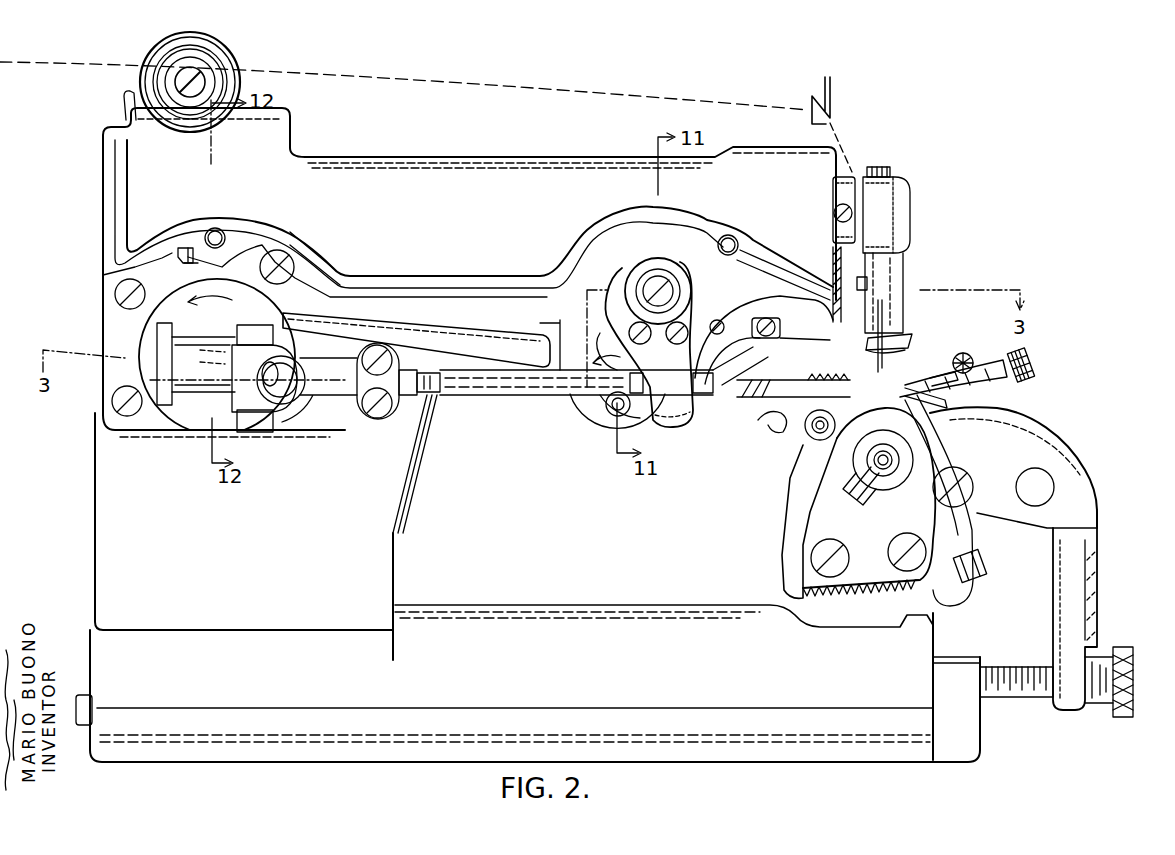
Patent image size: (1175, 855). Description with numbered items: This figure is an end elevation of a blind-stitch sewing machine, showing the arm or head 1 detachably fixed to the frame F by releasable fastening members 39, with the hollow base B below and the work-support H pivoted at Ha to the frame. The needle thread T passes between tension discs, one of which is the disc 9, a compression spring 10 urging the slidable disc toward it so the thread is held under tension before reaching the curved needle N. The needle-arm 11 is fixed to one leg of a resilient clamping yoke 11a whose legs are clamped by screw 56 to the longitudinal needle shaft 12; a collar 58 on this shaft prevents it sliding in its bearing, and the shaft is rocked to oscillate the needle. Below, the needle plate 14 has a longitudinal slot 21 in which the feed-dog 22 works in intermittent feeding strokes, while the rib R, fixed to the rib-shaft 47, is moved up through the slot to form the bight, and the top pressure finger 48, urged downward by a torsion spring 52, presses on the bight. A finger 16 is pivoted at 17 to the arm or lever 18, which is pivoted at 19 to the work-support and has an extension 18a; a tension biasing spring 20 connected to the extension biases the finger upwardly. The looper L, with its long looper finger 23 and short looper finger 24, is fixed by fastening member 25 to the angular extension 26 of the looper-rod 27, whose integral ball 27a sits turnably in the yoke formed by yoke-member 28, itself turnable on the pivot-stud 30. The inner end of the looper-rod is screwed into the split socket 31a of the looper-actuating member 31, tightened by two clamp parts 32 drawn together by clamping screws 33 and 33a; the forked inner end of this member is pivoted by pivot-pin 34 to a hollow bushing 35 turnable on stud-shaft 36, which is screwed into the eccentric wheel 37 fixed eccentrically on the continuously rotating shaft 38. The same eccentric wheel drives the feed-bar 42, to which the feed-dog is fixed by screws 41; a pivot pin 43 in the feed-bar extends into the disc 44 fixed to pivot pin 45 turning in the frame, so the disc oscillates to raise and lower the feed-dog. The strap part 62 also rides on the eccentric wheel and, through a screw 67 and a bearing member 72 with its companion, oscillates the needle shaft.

The arm or head 1 is at (383, 563).
The disc 9 is at (220, 49).
The compression spring 10 is at (168, 57).
The needle-arm 11 is at (900, 268).
The resilient clamping yoke 11a is at (898, 193).
The needle shaft 12 is at (843, 205).
The needle plate 14 is at (760, 388).
The finger 16 is at (758, 420).
The pivot 17 is at (812, 432).
The arm or lever 18 is at (822, 452).
The extension 18a is at (962, 533).
The pivot 19 is at (970, 490).
The tension biasing spring 20 is at (862, 592).
The longitudinal slot 21 is at (945, 402).
The feed-dog 22 is at (837, 378).
The long looper finger 23 is at (905, 342).
The short looper finger 24 is at (893, 358).
The fastening member 25 is at (766, 318).
The angular extension 26 is at (735, 349).
The looper-rod 27 is at (487, 397).
The ball 27a is at (625, 408).
The yoke-member 28 is at (683, 417).
The pivot-stud 30 is at (662, 288).
The looper-actuating member 31 is at (347, 392).
The socket 31a is at (415, 417).
The clamp parts 32 is at (408, 357).
The clamping screw 33 is at (364, 354).
The clamping screw 33a is at (380, 413).
The pivot-pin 34 is at (258, 434).
The hollow bushing 35 is at (203, 324).
The stud-shaft 36 is at (278, 376).
The eccentric wheel 37 is at (170, 318).
The shaft 38 is at (215, 347).
The releasable fastening member 39 is at (116, 294).
The screws 41 is at (719, 322).
The feed-bar 42 is at (390, 313).
The pivot pin 43 is at (612, 335).
The disc 44 is at (590, 407).
The pivot pin 45 is at (616, 408).
The rib-shaft 47 is at (882, 430).
The top pressure finger 48 is at (943, 373).
The torsion spring 52 is at (967, 356).
The screw 56 is at (885, 172).
The collar 58 is at (845, 178).
The eccentric strap part 62 is at (283, 292).
The screw 67 is at (183, 247).
The bearing member 72 is at (180, 252).
The base B is at (583, 627).
The frame F is at (442, 160).
The work-support H is at (1056, 420).
The pivot Ha is at (1037, 487).
The looper L is at (813, 332).
The curved needle N is at (905, 320).
The rib R is at (957, 462).
The needle thread T is at (418, 80).